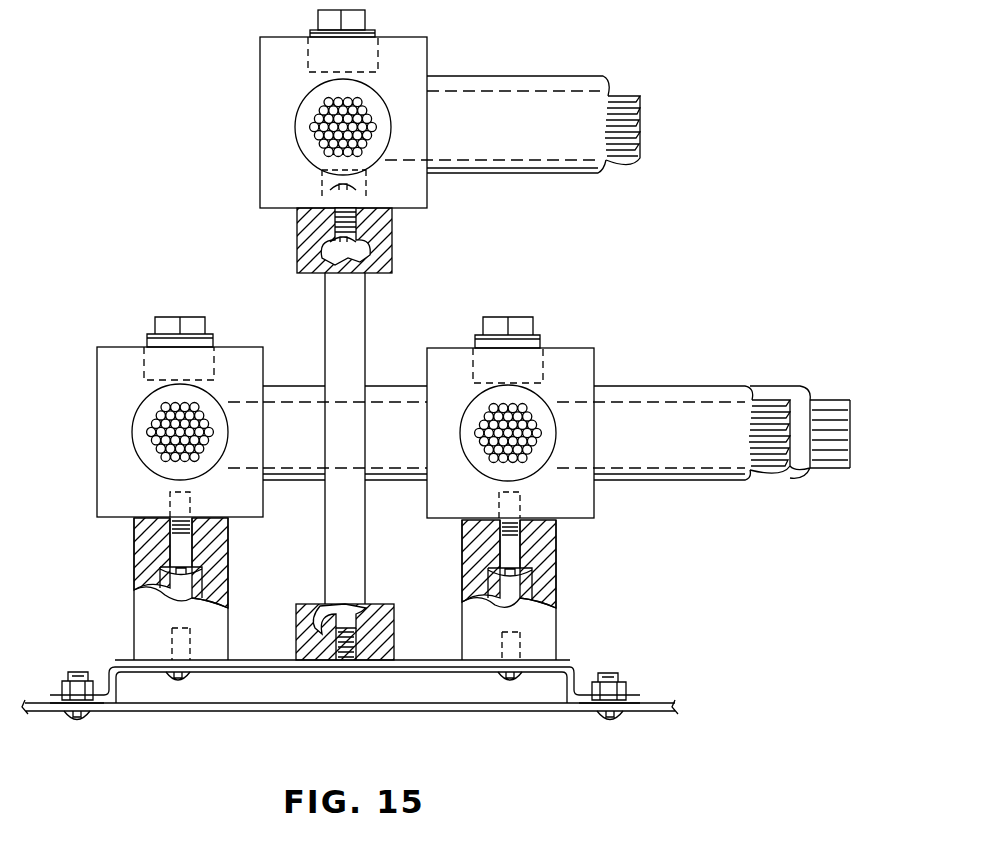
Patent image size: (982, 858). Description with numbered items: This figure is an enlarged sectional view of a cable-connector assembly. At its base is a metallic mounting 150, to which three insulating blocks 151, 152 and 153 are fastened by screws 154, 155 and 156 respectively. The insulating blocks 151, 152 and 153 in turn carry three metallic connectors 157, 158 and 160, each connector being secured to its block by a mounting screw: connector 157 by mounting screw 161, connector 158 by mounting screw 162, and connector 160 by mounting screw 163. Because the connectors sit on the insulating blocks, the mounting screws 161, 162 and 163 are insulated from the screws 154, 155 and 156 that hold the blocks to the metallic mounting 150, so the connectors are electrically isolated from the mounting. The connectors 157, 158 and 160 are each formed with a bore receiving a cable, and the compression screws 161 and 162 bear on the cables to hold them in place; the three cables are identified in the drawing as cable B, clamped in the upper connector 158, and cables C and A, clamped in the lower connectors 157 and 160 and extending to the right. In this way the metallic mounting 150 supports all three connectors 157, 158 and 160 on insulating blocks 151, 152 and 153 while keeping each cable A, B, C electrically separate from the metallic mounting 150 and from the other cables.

The metallic mounting 150 is at (113, 672).
The insulating block 151 is at (140, 560).
The insulating block 152 is at (346, 325).
The insulating block 153 is at (483, 635).
The screw 154 is at (190, 682).
The screw 155 is at (346, 675).
The screw 156 is at (514, 682).
The metallic connector 157 is at (110, 397).
The metallic connector 158 is at (268, 125).
The metallic connector 160 is at (573, 367).
The mounting screw 161 is at (155, 333).
The mounting screw 162 is at (330, 190).
The mounting screw 163 is at (545, 555).
The cable A is at (795, 458).
The cable B is at (512, 147).
The cable C is at (668, 452).